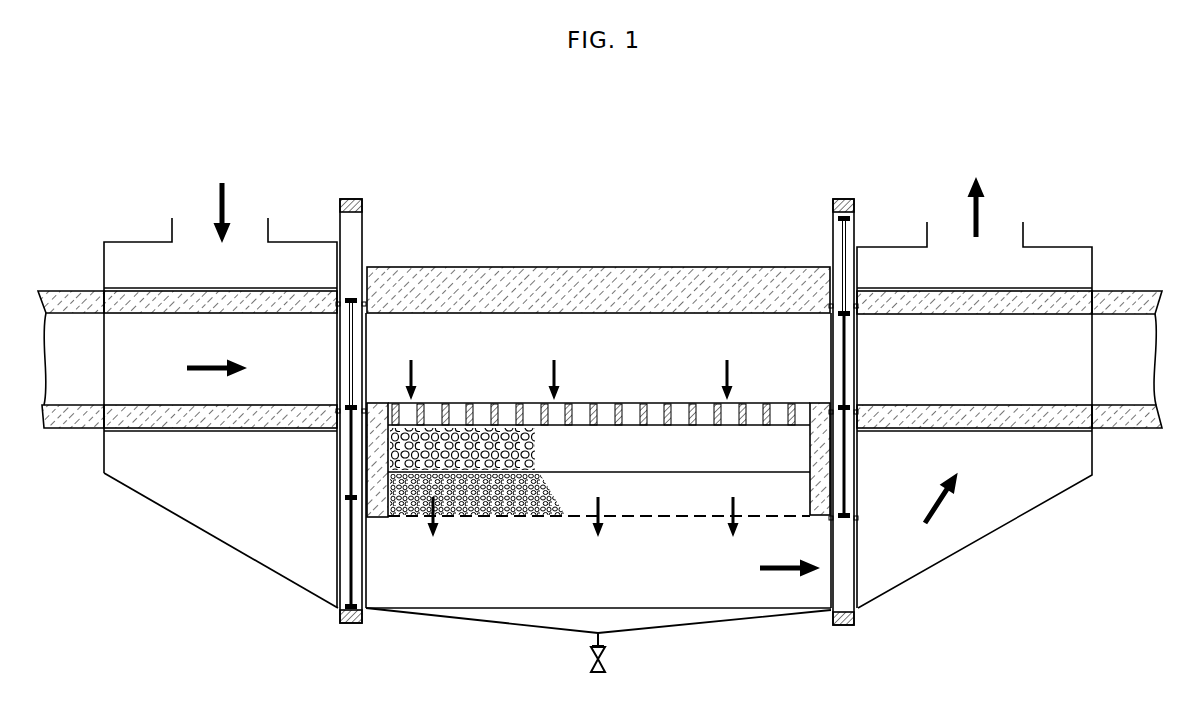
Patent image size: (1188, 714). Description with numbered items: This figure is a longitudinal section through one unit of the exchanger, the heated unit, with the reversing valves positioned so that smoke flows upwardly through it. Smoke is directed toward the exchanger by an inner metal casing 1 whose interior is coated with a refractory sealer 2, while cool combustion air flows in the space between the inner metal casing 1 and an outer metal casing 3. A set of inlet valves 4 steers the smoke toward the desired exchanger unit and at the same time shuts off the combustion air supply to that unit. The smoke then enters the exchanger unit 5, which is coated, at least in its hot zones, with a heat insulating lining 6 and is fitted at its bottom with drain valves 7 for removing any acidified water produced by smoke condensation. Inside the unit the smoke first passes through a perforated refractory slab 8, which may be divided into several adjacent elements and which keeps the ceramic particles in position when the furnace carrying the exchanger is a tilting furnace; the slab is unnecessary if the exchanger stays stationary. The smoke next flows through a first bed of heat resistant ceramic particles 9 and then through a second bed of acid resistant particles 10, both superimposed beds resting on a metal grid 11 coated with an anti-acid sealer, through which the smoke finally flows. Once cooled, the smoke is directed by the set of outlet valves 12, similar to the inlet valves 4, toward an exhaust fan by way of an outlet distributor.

The inner metal casing 1 is at (142, 430).
The refractory sealer 2 is at (185, 412).
The outer metal casing 3 is at (198, 527).
The inlet valves 4 is at (350, 626).
The exchanger unit 5 is at (478, 623).
The heat insulating lining 6 is at (422, 292).
The drain valves 7 is at (592, 658).
The perforated refractory slab 8 is at (520, 400).
The first bed of heat resistant ceramic particles 9 is at (428, 455).
The second bed of acid resistant particles 10 is at (463, 490).
The metal grid 11 is at (705, 518).
The outlet valves 12 is at (845, 205).